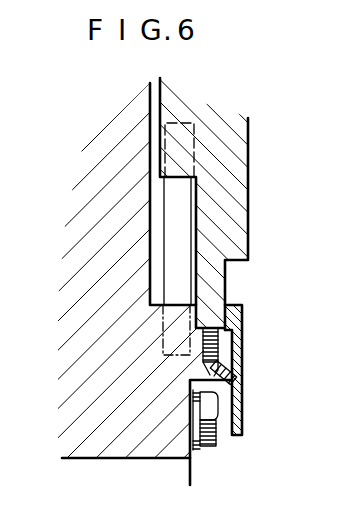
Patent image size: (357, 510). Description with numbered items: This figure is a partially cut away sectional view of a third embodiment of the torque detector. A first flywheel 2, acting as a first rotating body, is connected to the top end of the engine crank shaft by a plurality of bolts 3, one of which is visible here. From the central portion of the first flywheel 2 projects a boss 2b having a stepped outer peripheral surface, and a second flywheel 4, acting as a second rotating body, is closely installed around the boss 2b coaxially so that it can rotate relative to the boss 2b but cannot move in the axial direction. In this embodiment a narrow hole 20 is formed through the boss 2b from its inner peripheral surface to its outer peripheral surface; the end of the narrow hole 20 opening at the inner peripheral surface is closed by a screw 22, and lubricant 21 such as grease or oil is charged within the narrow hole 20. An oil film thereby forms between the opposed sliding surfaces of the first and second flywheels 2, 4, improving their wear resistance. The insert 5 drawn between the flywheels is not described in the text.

The first flywheel 2 is at (87, 291).
The boss 2b is at (157, 417).
The bolt 3 is at (217, 420).
The second flywheel 4 is at (230, 204).
The insert 5 is at (172, 228).
The narrow hole 20 is at (242, 334).
The lubricant 21 is at (215, 345).
The screw 22 is at (236, 378).